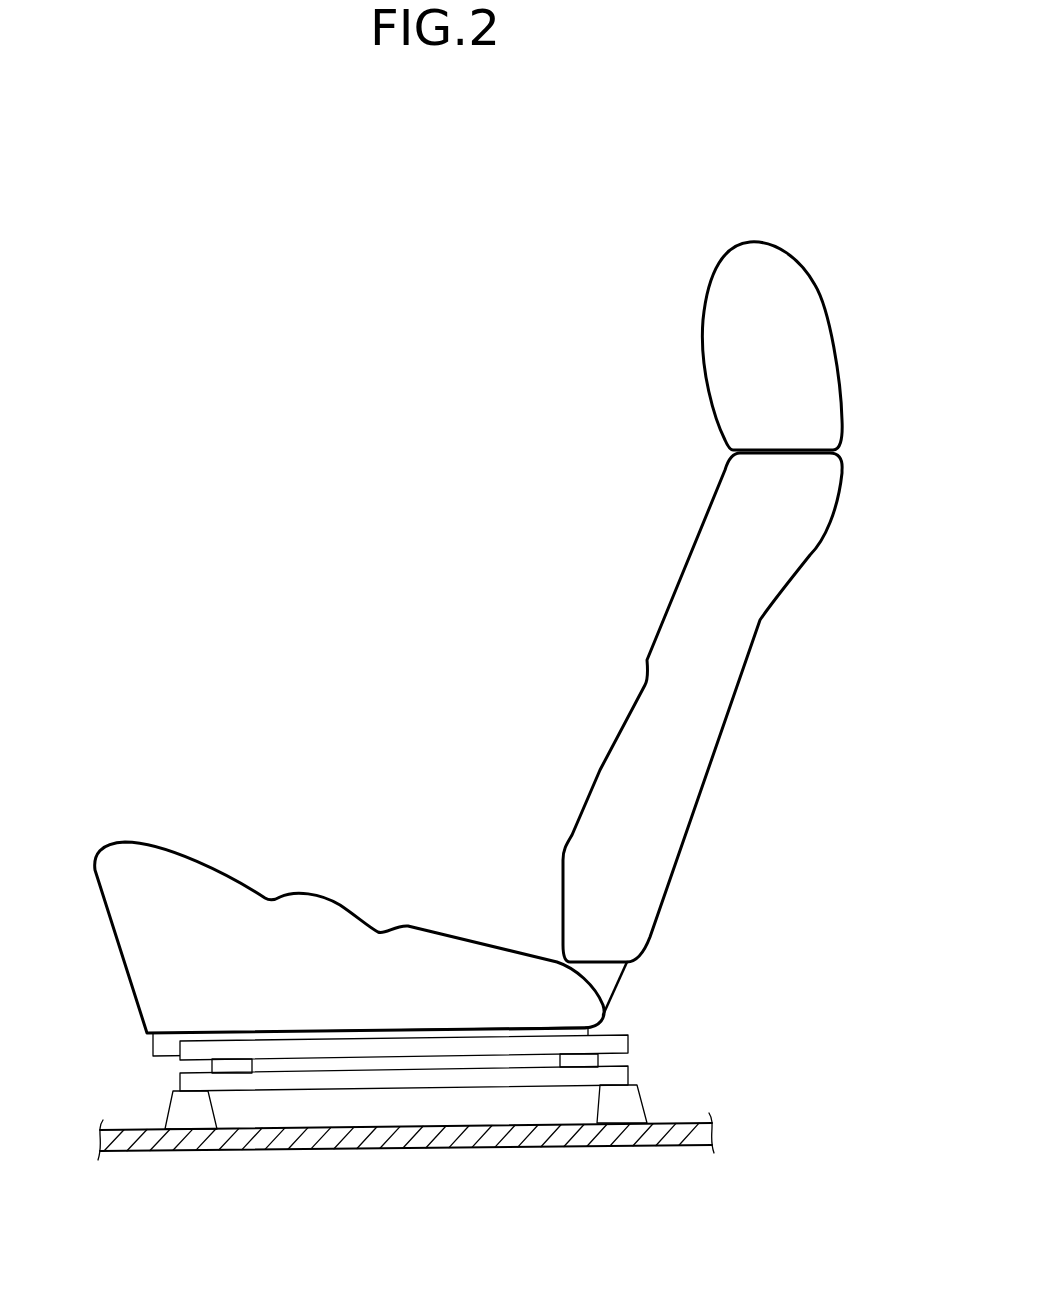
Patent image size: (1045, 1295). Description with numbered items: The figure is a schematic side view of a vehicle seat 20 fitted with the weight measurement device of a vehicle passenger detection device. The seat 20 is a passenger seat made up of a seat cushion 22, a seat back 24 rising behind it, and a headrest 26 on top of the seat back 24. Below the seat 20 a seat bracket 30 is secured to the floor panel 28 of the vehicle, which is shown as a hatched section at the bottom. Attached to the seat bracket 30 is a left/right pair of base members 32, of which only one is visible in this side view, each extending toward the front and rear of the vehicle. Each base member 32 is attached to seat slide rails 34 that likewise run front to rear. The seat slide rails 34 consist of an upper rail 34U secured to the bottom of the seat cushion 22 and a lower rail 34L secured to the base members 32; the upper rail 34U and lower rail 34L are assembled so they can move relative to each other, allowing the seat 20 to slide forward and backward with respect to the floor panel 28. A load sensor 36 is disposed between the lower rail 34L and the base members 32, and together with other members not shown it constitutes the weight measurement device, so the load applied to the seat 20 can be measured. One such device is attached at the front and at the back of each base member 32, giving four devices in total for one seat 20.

The vehicle seat 20 is at (507, 637).
The seat cushion 22 is at (422, 948).
The seat back 24 is at (673, 763).
The headrest 26 is at (800, 359).
The floor panel 28 is at (347, 1148).
The seat bracket 30 is at (167, 1110).
The base member 32 is at (475, 1077).
The seat slide rails 34 is at (461, 1064).
The upper rail 34U is at (172, 1042).
The lower rail 34L is at (352, 1038).
The load sensor 36 is at (232, 1065).